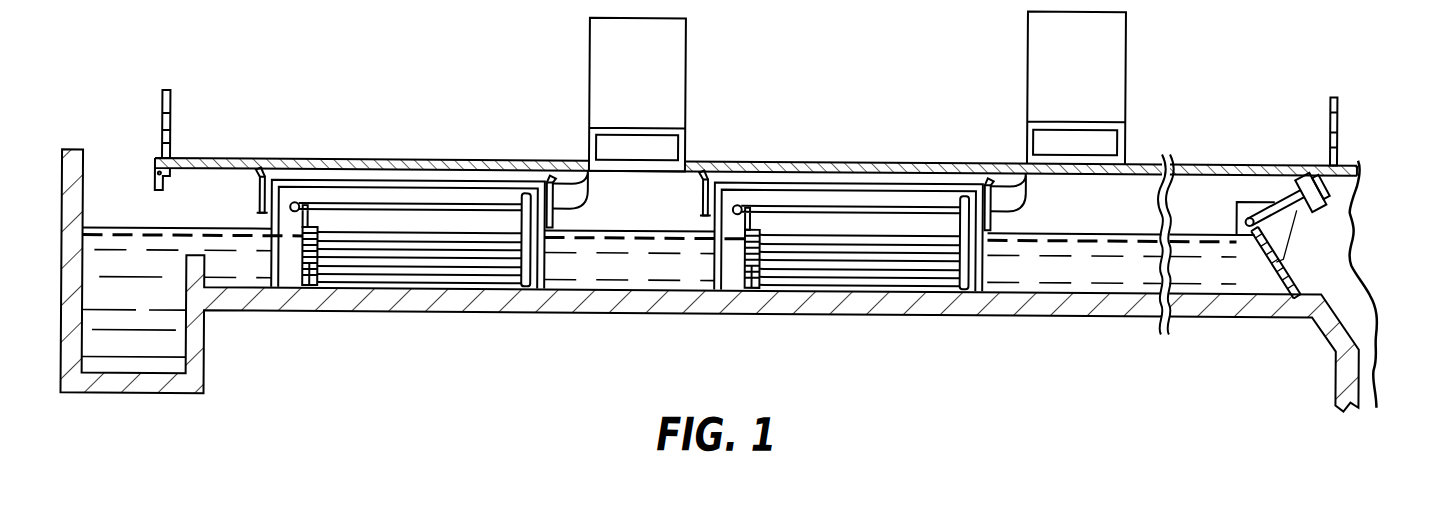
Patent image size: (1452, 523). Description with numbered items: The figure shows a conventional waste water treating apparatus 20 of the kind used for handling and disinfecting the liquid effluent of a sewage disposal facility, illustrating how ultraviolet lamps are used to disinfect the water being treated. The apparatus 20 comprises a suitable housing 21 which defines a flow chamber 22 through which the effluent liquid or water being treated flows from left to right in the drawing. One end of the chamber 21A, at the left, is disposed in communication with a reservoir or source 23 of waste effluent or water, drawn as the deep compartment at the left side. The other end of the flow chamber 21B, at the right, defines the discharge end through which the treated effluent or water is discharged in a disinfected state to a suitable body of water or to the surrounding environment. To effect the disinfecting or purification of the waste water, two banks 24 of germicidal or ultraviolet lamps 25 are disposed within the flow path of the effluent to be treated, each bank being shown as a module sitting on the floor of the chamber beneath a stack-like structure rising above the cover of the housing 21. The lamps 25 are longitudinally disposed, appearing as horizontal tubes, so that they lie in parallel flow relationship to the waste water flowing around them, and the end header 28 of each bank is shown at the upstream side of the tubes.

The waste water treating apparatus 20 is at (1192, 139).
The housing 21 is at (784, 160).
The one end of the chamber 21A is at (197, 197).
The other end of the flow chamber 21B is at (1322, 214).
The flow chamber 22 is at (650, 203).
The reservoir or source 23 is at (88, 250).
The bank of germicidal or ultraviolet lamps 24 is at (438, 278).
The germicidal or ultraviolet lamp 25 is at (418, 241).
The header 28 is at (312, 284).